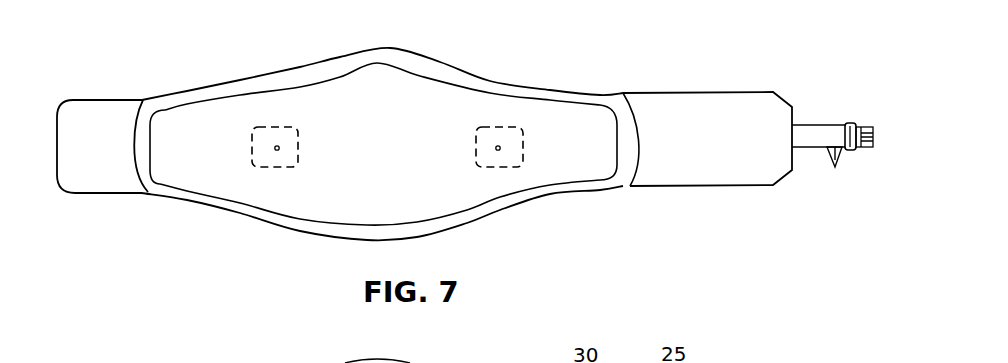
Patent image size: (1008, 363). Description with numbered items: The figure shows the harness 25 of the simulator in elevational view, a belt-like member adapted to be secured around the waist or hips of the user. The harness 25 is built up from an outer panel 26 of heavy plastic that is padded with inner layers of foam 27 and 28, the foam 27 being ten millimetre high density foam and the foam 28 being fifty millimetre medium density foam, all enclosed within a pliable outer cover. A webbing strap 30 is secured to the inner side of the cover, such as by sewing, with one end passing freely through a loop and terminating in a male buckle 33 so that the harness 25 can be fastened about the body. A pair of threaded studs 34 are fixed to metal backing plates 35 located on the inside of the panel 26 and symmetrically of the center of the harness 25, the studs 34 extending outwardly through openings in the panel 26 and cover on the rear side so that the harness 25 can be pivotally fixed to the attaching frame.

The harness 25 is at (645, 68).
The outer panel 26 is at (418, 85).
The inner layer of foam 27 is at (522, 92).
The inner layer of foam 28 is at (716, 173).
The webbing strap 30 is at (815, 128).
The male buckle 33 is at (860, 150).
The threaded stud 34 is at (277, 150).
The metal backing plate 35 is at (257, 127).